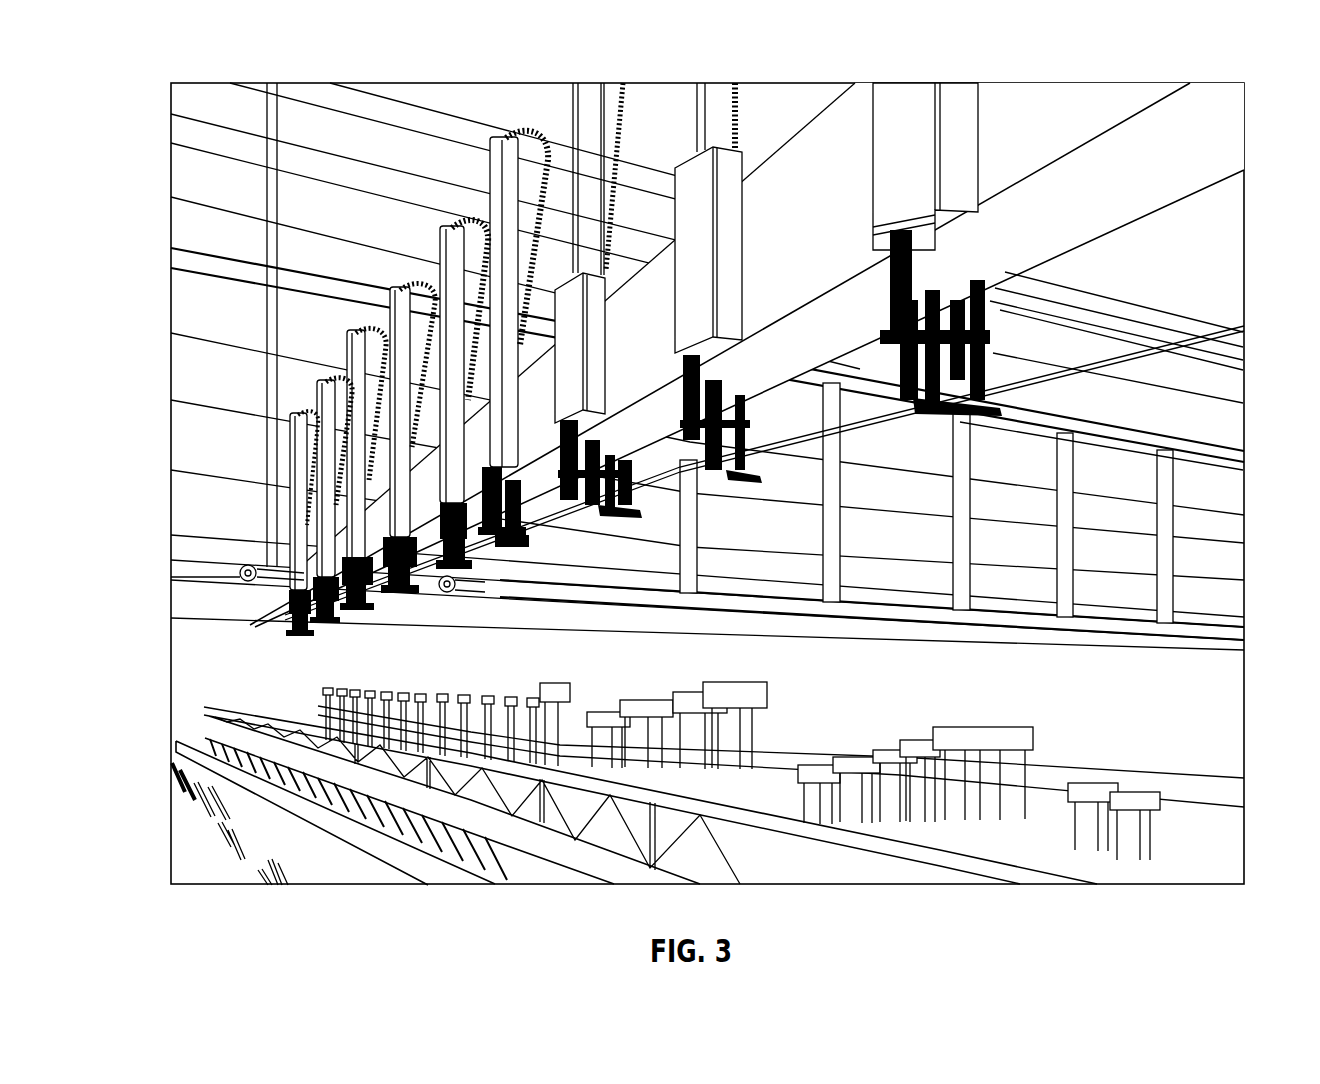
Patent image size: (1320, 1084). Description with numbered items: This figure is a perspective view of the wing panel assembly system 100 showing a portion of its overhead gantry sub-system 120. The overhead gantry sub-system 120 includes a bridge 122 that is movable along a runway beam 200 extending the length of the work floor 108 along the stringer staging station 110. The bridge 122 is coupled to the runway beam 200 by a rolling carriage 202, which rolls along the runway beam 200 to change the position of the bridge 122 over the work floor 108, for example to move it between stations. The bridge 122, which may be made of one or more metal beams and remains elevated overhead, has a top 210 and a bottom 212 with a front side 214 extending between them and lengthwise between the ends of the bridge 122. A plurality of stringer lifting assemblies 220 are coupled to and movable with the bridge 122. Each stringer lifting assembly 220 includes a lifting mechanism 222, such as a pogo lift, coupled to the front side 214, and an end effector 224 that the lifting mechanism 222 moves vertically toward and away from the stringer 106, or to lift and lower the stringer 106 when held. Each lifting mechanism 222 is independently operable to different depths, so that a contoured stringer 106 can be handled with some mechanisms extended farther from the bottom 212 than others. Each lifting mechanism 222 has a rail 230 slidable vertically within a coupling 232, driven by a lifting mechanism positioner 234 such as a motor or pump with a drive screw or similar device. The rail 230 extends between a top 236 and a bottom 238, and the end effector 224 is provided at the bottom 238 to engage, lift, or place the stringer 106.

The wing panel assembly system 100 is at (148, 412).
The stringer 106 is at (1141, 350).
The work floor 108 is at (193, 873).
The stringer staging station 110 is at (1220, 797).
The overhead gantry sub-system 120 is at (1222, 117).
The bridge 122 is at (1157, 180).
The runway beam 200 is at (193, 600).
The rolling carriage 202 is at (240, 569).
The top 210 is at (648, 257).
The bottom 212 is at (632, 425).
The front side 214 is at (582, 268).
The stringer lifting assembly 220 is at (495, 300).
The lifting mechanism 222 is at (507, 166).
The end effector 224 is at (461, 679).
The rail 230 is at (507, 190).
The coupling 232 is at (510, 470).
The lifting mechanism positioner 234 is at (423, 493).
The top 236 is at (298, 420).
The bottom 238 is at (480, 556).